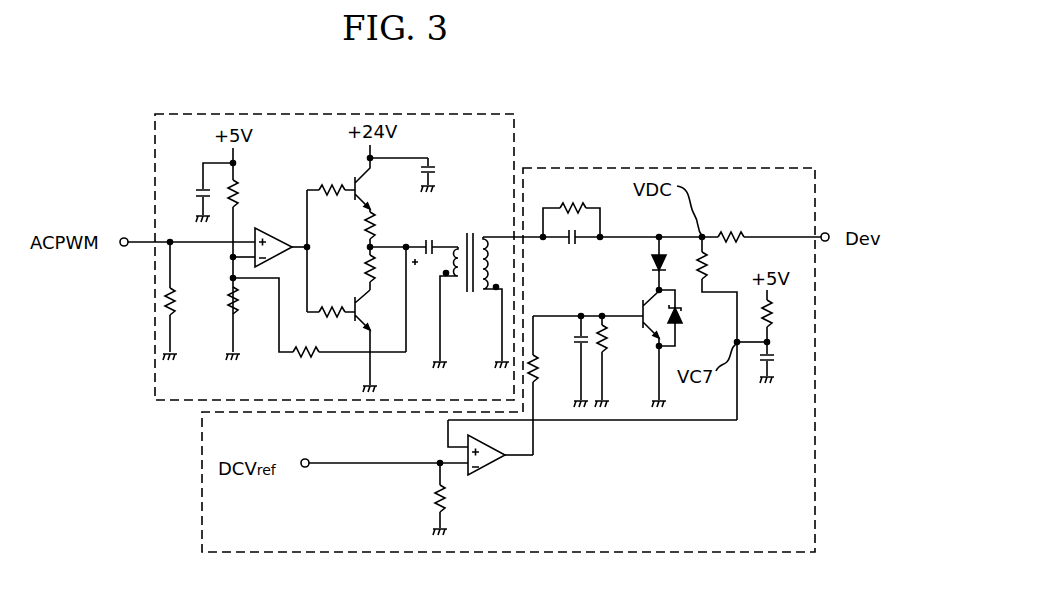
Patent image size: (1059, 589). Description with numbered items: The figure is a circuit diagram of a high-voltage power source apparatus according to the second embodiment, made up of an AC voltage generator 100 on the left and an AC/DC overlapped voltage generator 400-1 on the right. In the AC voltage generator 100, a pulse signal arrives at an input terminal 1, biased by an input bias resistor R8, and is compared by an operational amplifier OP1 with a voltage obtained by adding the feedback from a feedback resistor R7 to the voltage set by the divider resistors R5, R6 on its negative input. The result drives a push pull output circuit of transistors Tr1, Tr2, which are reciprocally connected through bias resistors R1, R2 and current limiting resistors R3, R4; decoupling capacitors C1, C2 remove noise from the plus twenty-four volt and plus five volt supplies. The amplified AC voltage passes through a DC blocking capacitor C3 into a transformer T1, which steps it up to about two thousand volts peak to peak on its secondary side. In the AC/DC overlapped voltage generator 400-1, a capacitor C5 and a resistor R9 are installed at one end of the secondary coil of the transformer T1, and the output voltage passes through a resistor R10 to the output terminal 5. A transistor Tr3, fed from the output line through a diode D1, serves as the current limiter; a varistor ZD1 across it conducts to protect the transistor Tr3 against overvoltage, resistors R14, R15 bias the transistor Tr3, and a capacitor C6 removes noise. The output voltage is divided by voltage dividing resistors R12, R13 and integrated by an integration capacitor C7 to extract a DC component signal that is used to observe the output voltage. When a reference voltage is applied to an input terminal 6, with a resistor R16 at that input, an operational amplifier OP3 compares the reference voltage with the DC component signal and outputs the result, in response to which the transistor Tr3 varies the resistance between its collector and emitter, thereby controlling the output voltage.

The AC voltage generator 100 is at (155, 128).
The AC/DC overlapped voltage generator 400-1 is at (672, 168).
The input terminal 1 is at (124, 237).
The output terminal 5 is at (829, 233).
The input terminal 6 is at (308, 459).
The bias resistor R1 is at (331, 178).
The bias resistor R2 is at (331, 300).
The current limiting resistor R3 is at (355, 228).
The current limiting resistor R4 is at (355, 268).
The voltage divider resistor R5 is at (249, 191).
The voltage divider resistor R6 is at (248, 300).
The feedback resistor R7 is at (319, 330).
The input bias resistor R8 is at (184, 301).
The resistor R9 is at (571, 211).
The resistor R10 is at (735, 226).
The voltage dividing resistor R12 is at (721, 328).
The voltage dividing resistor R13 is at (787, 316).
The biasing resistor R14 is at (619, 361).
The biasing resistor R15 is at (552, 385).
The resistor R16 is at (418, 499).
The decoupling capacitor C1 is at (442, 175).
The decoupling capacitor C2 is at (200, 192).
The DC blocking capacitor C3 is at (432, 240).
The capacitor C5 is at (577, 252).
The capacitor C6 is at (568, 361).
The integration capacitor C7 is at (782, 362).
The transistor Tr1 is at (383, 183).
The transistor Tr2 is at (383, 341).
The transistor Tr3 is at (599, 346).
The diode D1 is at (646, 263).
The varistor ZD1 is at (693, 318).
The transformer T1 is at (471, 289).
The operational amplifier OP1 is at (281, 241).
The operational amplifier OP3 is at (500, 468).